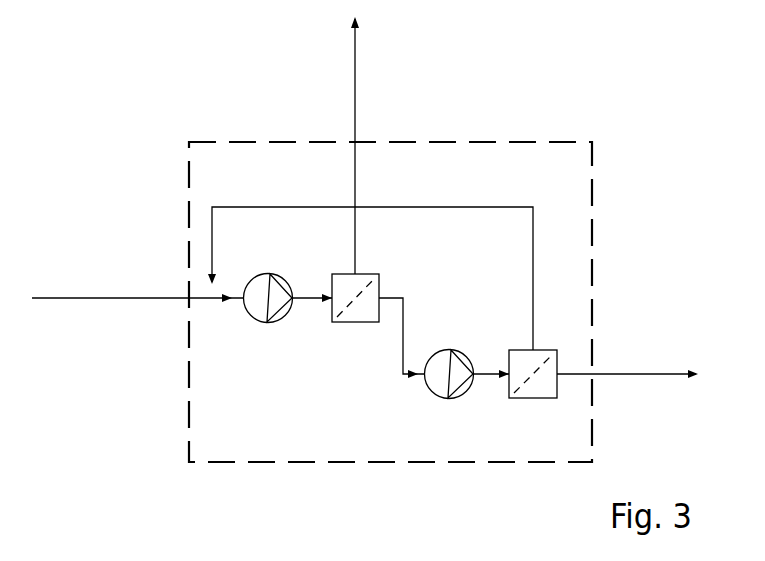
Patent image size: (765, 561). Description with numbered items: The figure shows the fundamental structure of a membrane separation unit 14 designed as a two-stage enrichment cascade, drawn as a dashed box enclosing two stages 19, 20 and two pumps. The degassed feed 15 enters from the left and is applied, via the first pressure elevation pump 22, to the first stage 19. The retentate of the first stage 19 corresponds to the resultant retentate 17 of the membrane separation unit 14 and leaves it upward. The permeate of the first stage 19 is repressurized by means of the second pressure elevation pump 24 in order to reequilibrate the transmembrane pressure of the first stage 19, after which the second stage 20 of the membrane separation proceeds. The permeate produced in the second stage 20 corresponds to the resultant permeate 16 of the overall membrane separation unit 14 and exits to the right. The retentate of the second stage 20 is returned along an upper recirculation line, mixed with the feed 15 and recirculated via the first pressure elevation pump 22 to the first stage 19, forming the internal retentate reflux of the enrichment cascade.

The membrane separation unit 14 is at (189, 195).
The degassed feed 15 is at (103, 298).
The resultant permeate 16 is at (651, 374).
The resultant retentate 17 is at (355, 102).
The first stage 19 is at (355, 322).
The second stage 20 is at (533, 398).
The first pressure elevation pump 22 is at (260, 321).
The second pressure elevation pump 24 is at (439, 396).